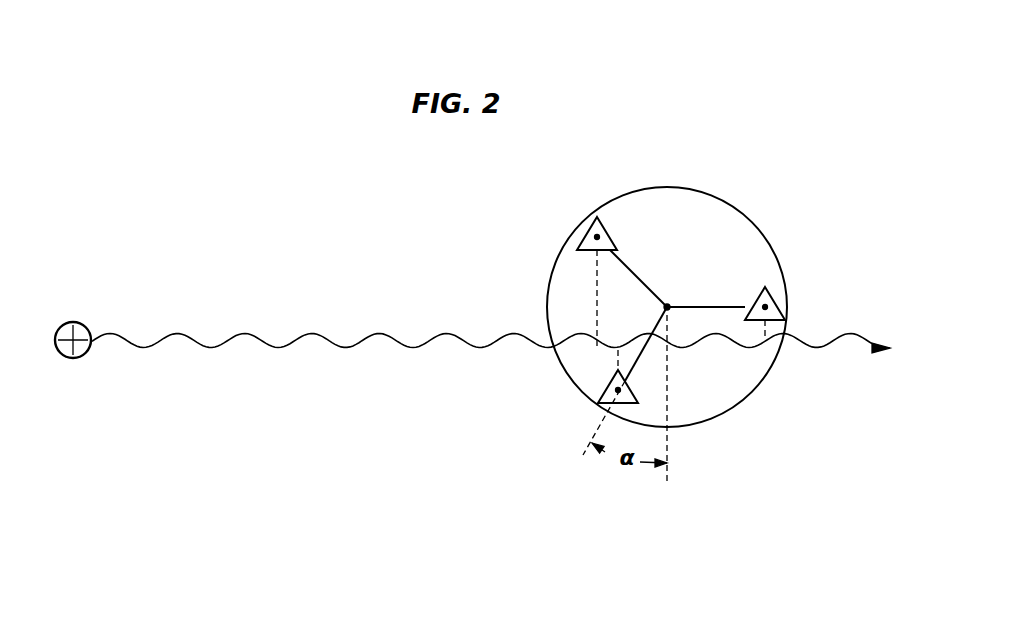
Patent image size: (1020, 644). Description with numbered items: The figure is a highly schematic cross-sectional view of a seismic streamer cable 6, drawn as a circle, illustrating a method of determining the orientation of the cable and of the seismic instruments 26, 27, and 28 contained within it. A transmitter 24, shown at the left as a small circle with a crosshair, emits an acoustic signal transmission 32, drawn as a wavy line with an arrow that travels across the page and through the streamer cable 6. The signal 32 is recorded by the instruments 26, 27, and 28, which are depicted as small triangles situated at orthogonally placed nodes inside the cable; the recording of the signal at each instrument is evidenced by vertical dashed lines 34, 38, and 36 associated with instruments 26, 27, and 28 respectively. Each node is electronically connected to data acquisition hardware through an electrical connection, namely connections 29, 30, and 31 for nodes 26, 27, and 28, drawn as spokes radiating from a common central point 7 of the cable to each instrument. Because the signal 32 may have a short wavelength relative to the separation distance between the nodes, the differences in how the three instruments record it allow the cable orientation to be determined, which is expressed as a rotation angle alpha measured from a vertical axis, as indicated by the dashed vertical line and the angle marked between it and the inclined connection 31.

The seismic streamer cable 6 is at (755, 225).
The axis of rotation 7 is at (667, 307).
The transmitter 24 is at (86, 325).
The seismic instrument 26 is at (588, 232).
The seismic instrument 27 is at (776, 303).
The seismic instrument 28 is at (607, 387).
The electrical connection 29 is at (628, 268).
The electrical connection 30 is at (720, 303).
The electrical connection 31 is at (640, 358).
The acoustic signal transmission 32 is at (240, 333).
The vertical dashed line 34 is at (595, 278).
The vertical dashed line 36 is at (615, 358).
The vertical dashed line 38 is at (786, 322).